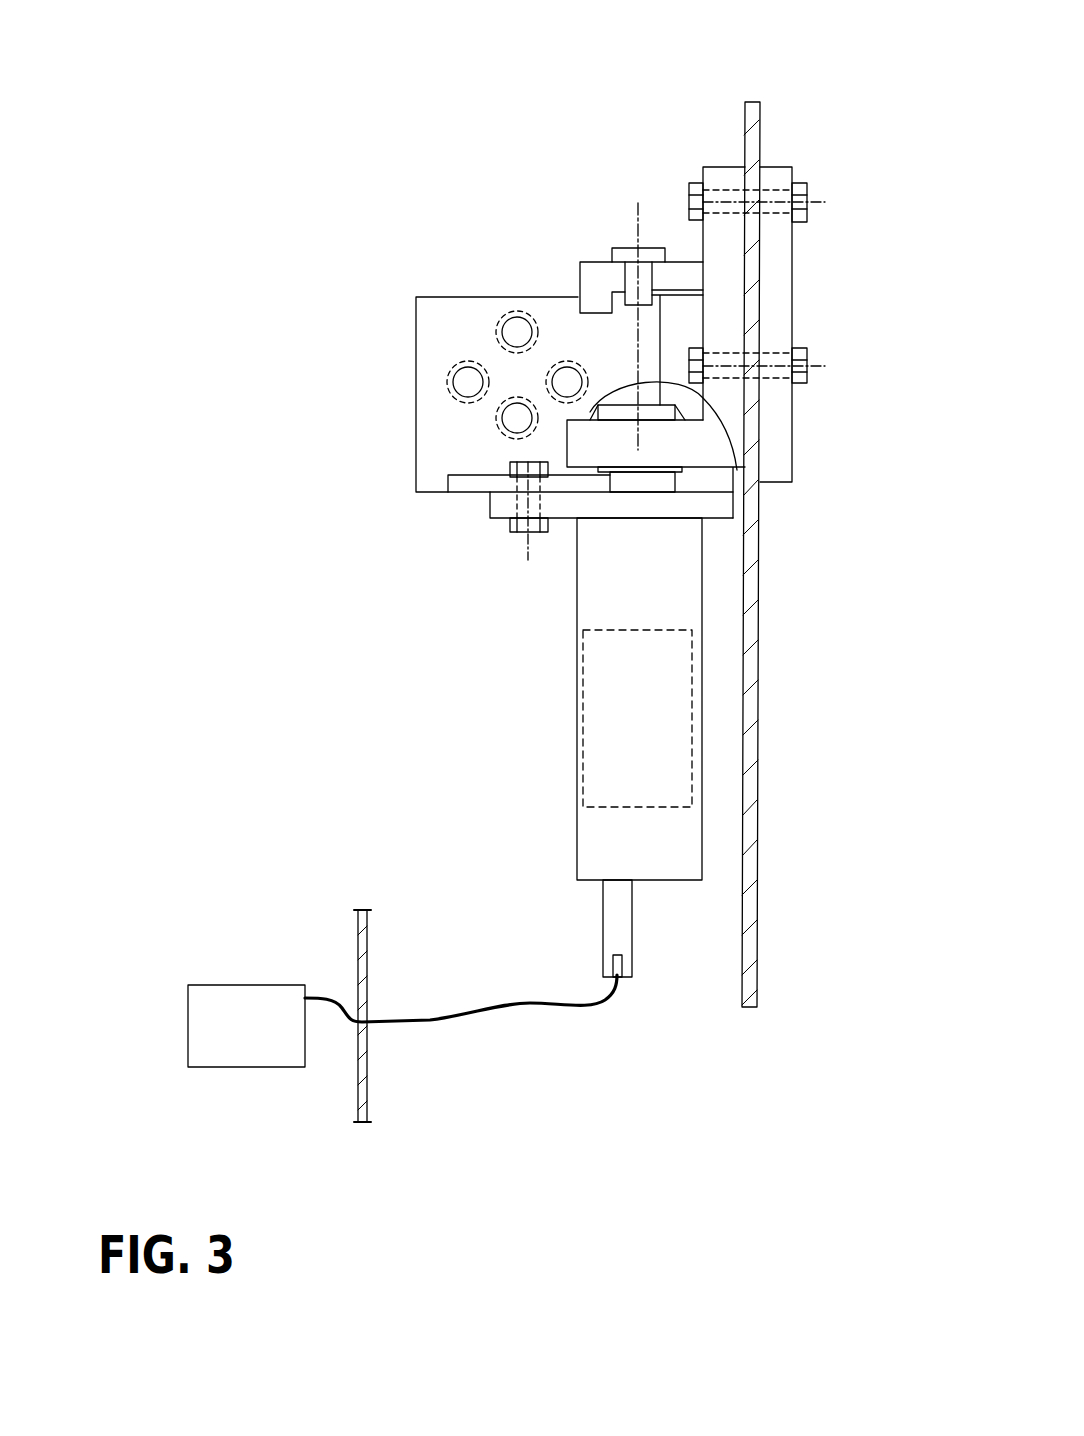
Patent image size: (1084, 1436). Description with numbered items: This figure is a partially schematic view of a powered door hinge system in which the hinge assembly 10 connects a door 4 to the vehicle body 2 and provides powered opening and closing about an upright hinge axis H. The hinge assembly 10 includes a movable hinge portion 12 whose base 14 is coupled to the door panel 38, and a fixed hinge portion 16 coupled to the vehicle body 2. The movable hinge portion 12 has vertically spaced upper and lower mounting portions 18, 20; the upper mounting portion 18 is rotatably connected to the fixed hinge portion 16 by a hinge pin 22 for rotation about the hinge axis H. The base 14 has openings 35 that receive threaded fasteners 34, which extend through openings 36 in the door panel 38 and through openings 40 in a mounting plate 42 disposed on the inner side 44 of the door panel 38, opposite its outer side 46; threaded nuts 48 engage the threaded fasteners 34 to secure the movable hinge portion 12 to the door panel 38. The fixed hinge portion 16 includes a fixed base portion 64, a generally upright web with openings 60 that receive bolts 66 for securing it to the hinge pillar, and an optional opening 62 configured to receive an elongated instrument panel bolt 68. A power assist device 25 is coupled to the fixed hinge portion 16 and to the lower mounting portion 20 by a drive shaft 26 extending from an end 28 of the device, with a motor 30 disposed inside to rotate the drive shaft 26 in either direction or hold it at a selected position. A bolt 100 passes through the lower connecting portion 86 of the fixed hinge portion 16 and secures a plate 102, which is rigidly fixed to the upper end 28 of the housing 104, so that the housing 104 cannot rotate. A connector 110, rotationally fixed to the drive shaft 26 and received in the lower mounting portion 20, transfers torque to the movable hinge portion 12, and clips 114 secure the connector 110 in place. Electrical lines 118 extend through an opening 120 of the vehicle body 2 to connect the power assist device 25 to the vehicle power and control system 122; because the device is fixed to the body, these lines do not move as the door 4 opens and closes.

The body 2 is at (369, 934).
The door 4 is at (762, 733).
The hinge assembly 10 is at (446, 647).
The movable hinge portion 12 is at (709, 286).
The base 14 is at (703, 242).
The fixed hinge portion 16 is at (410, 302).
The upper mounting portion 18 is at (580, 262).
The lower mounting portion 20 is at (565, 437).
The hinge pin 22 is at (630, 247).
The power assist device 25 is at (586, 747).
The drive shaft 26 is at (605, 480).
The end 28 is at (577, 518).
The motor 30 is at (612, 715).
The threaded fasteners 34 is at (690, 183).
The openings 35 is at (727, 190).
The openings 36 is at (796, 163).
The door panel 38 is at (750, 655).
The openings 40 is at (797, 183).
The mounting plate 42 is at (747, 203).
The inner side 44 is at (752, 787).
The outer side 46 is at (743, 968).
The threaded nuts 48 is at (793, 222).
The openings 60 is at (508, 318).
The opening 62 is at (562, 352).
The fixed base portion 64 is at (445, 337).
The bolts 66 is at (495, 336).
The instrument panel bolt 68 is at (567, 361).
The lower connecting portion 86 is at (453, 482).
The bolt 100 is at (508, 530).
The plate 102 is at (490, 505).
The housing 104 is at (577, 808).
The connector 110 is at (653, 413).
The clips 114 is at (737, 470).
The electrical lines 118 is at (430, 1021).
The opening 120 is at (368, 1017).
The vehicle power and control system 122 is at (255, 1000).
The hinge axis H is at (636, 213).